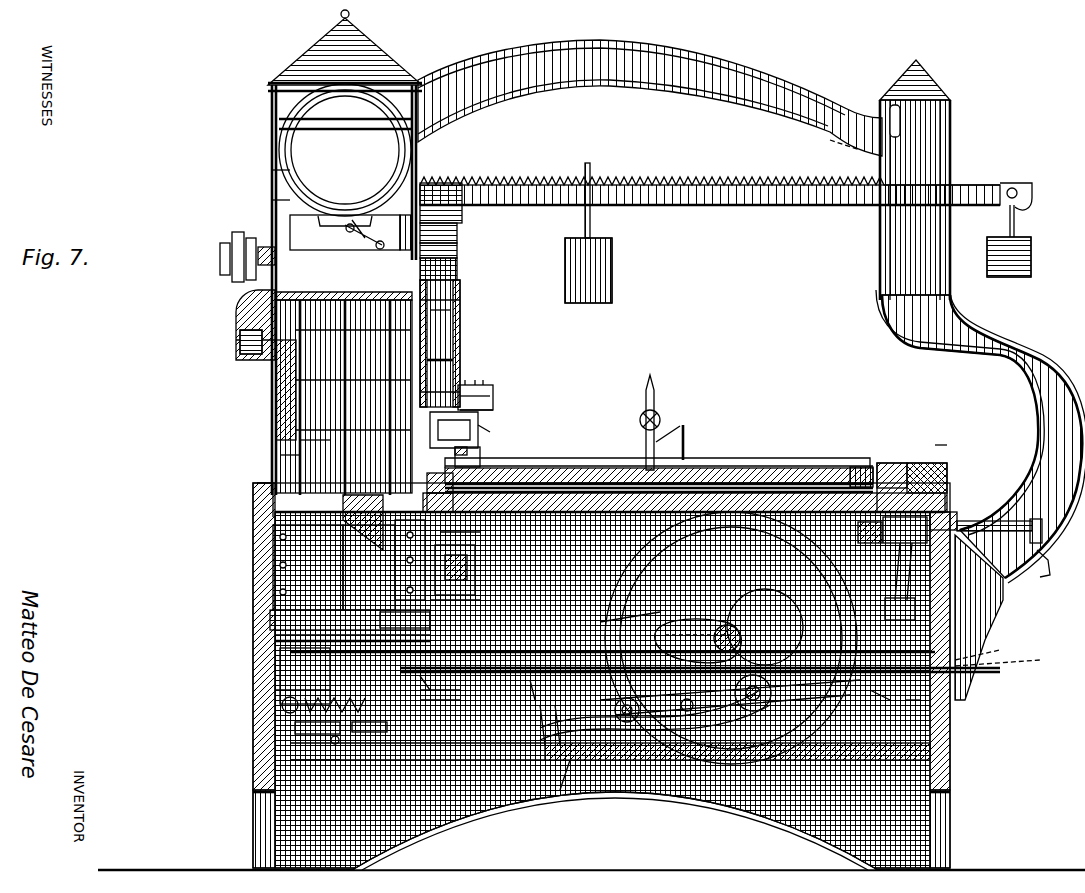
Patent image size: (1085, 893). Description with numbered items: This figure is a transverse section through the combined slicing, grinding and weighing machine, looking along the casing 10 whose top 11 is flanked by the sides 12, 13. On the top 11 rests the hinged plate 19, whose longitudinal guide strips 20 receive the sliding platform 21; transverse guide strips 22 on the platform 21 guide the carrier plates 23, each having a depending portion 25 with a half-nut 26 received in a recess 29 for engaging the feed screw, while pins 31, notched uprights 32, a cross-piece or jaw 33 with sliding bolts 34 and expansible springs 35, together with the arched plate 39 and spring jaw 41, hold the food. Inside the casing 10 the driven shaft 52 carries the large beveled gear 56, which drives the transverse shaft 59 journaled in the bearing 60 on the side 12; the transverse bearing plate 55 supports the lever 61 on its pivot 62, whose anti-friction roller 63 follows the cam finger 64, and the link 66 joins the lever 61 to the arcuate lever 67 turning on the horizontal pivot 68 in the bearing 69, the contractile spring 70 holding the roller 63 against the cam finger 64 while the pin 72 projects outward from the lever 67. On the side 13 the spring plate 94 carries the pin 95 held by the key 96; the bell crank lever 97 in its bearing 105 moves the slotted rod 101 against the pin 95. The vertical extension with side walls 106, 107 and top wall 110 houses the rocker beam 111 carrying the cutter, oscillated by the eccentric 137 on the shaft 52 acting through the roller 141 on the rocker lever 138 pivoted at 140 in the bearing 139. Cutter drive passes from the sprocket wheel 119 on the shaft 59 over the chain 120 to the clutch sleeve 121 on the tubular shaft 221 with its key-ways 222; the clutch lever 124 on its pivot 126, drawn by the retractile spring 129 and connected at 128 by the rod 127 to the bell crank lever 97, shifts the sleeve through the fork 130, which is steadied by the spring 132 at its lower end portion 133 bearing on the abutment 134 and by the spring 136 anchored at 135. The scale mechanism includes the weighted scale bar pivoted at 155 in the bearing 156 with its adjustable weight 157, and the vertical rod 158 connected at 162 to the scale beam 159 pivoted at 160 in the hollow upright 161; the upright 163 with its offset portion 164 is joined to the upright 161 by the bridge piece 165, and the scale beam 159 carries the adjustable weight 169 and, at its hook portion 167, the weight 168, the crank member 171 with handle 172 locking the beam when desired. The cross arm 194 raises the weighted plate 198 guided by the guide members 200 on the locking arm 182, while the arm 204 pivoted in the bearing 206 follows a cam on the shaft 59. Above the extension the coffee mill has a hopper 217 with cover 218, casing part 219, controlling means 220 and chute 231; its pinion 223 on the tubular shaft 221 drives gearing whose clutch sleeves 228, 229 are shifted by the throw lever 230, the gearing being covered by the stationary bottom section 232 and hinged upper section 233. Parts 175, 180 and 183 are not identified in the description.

The casing 10 is at (270, 705).
The top 11 is at (745, 478).
The side wall 12 is at (262, 773).
The side wall 13 is at (945, 725).
The plate 19 is at (805, 480).
The guide strips 20 is at (915, 478).
The platform 21 is at (565, 470).
The guide strips 22 is at (775, 470).
The carrier plates 23 is at (700, 470).
The depending portions 25 is at (890, 465).
The half-nuts 26 is at (858, 465).
The recess 29 is at (936, 445).
The pins 31 is at (668, 448).
The uprights 32 is at (655, 384).
The cross-piece or jaw 33 is at (648, 458).
The sliding bolts 34 is at (642, 420).
The expansible springs 35 is at (686, 430).
The slotted and arched plate 39 is at (493, 395).
The spring jaw 41 is at (493, 412).
The driven shaft 52 is at (731, 638).
The bearing plate 55 is at (920, 747).
The beveled gear 56 is at (731, 638).
The transverse shaft 59 is at (600, 622).
The bearing 60 is at (285, 680).
The lever 61 is at (740, 700).
The pivot 62 is at (628, 722).
The anti-friction roller 63 is at (760, 740).
The cam finger 64 is at (698, 641).
The link 66 is at (918, 596).
The arcuate lever 67 is at (765, 618).
The horizontal pivot 68 is at (950, 520).
The bearing 69 is at (948, 503).
The contractile spring 70 is at (482, 432).
The pin 72 is at (1053, 567).
The spring plate 94 is at (950, 700).
The pin 95 is at (1005, 668).
The key 96 is at (990, 658).
The bell crank lever 97 is at (870, 666).
The rod 101 is at (880, 700).
The bearing 105 is at (905, 719).
The side wall 106 is at (280, 414).
The side wall 107 is at (439, 270).
The top wall 110 is at (262, 340).
The rocker beam 111 is at (255, 356).
The sprocket wheel 119 is at (285, 634).
The endless chain 120 is at (273, 535).
The clutch sleeve 121 is at (468, 599).
The clutch lever 124 is at (395, 560).
The pivot 126 is at (300, 552).
The rod 127 is at (530, 680).
The pivotal connection 128 is at (426, 682).
The retractile spring 129 is at (295, 732).
The fork 130 is at (300, 440).
The spring 132 is at (280, 481).
The lower end portion 133 is at (282, 455).
The abutment 134 is at (480, 435).
The anchored end 135 is at (418, 472).
The spring 136 is at (452, 392).
The cam or eccentric 137 is at (607, 560).
The rocker lever 138 is at (462, 692).
The bearing 139 is at (540, 735).
The pivot 140 is at (558, 792).
The anti-friction roller 141 is at (720, 760).
The horizontal pivot 155 is at (328, 745).
The bearing 156 is at (315, 797).
The adjustable weight 157 is at (375, 752).
The vertical rod 158 is at (280, 690).
The scale beam 159 is at (682, 210).
The pivot 160 is at (418, 200).
The hollow upright 161 is at (272, 176).
The pivotal connection 162 is at (272, 200).
The upright 163 is at (880, 268).
The offset portion 164 is at (1040, 424).
The bridge piece 165 is at (742, 106).
The hook portion 167 is at (1024, 200).
The weight 168 is at (1024, 264).
The adjustable weight 169 is at (614, 294).
The crank member 171 is at (842, 155).
The crank portion or handle 172 is at (890, 112).
The bar 175 is at (460, 360).
The plate 180 is at (280, 646).
The locking arm 182 is at (405, 623).
The strip 183 is at (278, 612).
The cross arm 194 is at (470, 537).
The weighted plate 198 is at (476, 572).
The guide members 200 is at (463, 572).
The arm 204 is at (462, 832).
The bearing 206 is at (417, 826).
The hopper 217 is at (345, 155).
The removable cover 218 is at (345, 69).
The casing part 219 is at (290, 212).
The controlling means 220 is at (228, 272).
The tubular shaft 221 is at (460, 326).
The key-ways 222 is at (282, 391).
The pinion 223 is at (458, 306).
The clutch sleeve 228 is at (457, 250).
The clutch sleeve 229 is at (430, 224).
The throw lever 230 is at (349, 237).
The chute or spout 231 is at (250, 318).
The bottom section 232 is at (492, 396).
The upper section 233 is at (496, 300).